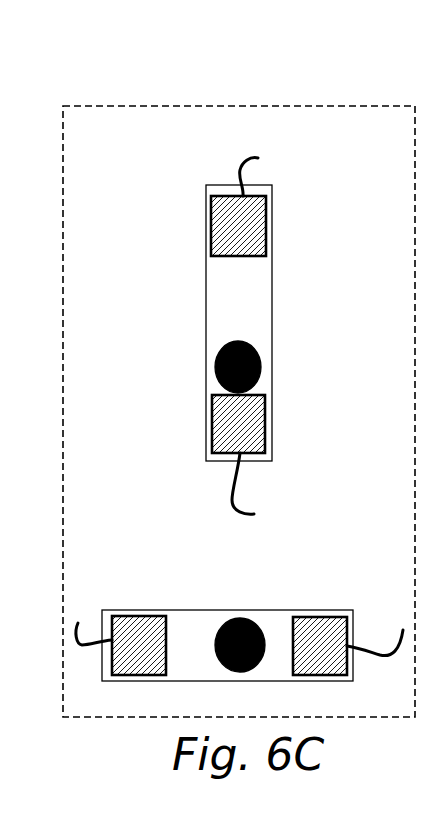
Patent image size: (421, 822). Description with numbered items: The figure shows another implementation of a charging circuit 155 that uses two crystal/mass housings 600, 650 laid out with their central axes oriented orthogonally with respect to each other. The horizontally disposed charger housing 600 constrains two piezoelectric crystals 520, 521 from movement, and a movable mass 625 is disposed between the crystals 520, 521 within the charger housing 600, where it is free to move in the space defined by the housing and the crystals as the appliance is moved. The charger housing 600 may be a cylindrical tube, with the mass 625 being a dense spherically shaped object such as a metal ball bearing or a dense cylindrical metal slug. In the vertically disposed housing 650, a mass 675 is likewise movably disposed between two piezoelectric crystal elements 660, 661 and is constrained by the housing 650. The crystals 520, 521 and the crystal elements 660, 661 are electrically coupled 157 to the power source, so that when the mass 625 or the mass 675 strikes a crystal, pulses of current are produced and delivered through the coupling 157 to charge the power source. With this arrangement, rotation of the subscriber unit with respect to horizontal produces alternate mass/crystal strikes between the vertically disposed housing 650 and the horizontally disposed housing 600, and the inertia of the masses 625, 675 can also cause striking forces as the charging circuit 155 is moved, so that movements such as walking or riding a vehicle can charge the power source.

The charging circuit 155 is at (357, 105).
The coupling 157 is at (258, 158).
The housing 650 is at (207, 285).
The piezoelectric crystal element 660 is at (211, 218).
The piezoelectric crystal element 661 is at (212, 412).
The mass 675 is at (220, 352).
The charger housing 600 is at (173, 610).
The piezoelectric crystal 520 is at (137, 675).
The piezoelectric crystal 521 is at (318, 675).
The movable mass 625 is at (232, 618).